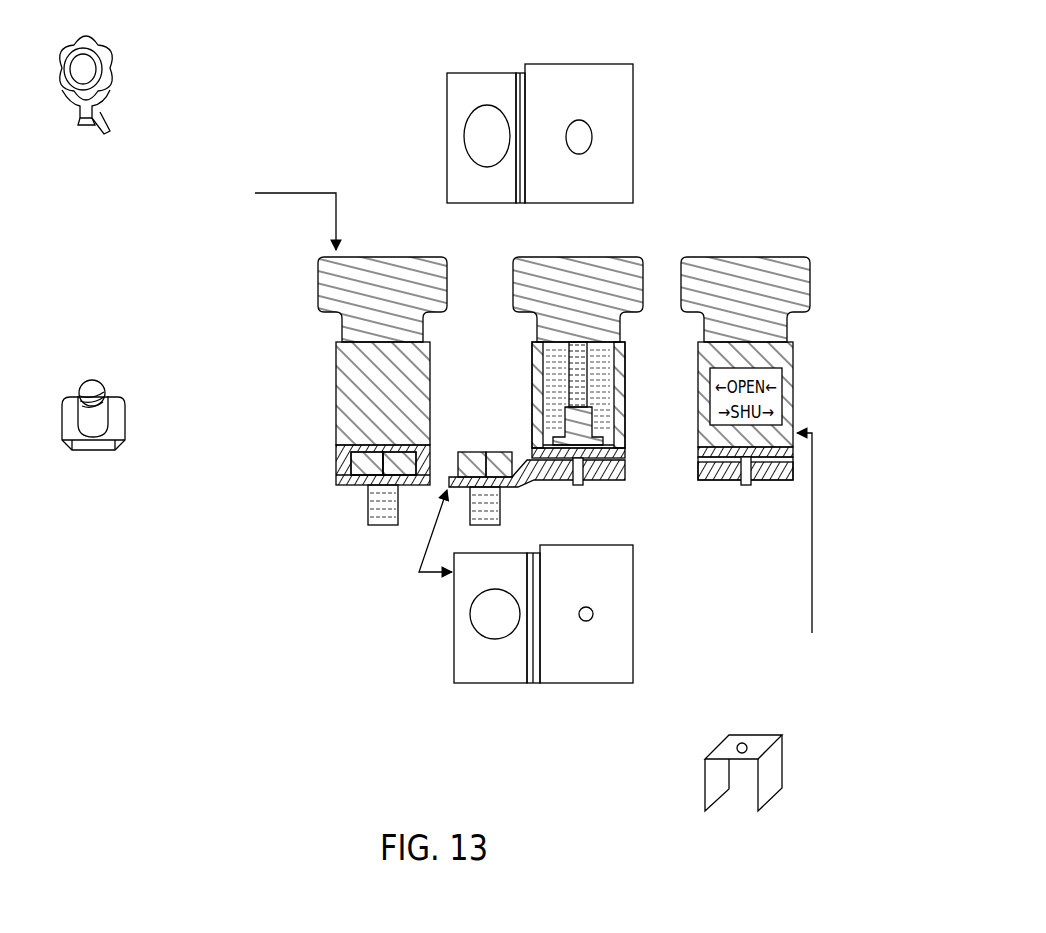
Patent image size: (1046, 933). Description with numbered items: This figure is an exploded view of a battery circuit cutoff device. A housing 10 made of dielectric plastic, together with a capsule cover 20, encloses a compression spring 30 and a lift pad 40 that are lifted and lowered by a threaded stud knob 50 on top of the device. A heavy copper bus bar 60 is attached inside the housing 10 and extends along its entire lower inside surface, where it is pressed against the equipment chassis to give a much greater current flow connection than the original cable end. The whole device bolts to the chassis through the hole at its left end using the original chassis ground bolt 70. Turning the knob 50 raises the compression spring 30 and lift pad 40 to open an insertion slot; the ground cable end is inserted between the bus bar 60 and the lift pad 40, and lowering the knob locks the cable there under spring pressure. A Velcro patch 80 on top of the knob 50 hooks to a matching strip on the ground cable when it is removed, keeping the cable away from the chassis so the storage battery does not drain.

The housing 10 is at (653, 70).
The capsule cover 20 is at (703, 785).
The compression spring 30 is at (568, 380).
The lift pad 40 is at (628, 452).
The threaded stud knob 50 is at (133, 57).
The copper bus bar 60 is at (452, 623).
The chassis ground bolt 70 is at (477, 450).
The Velcro patch 80 is at (393, 250).